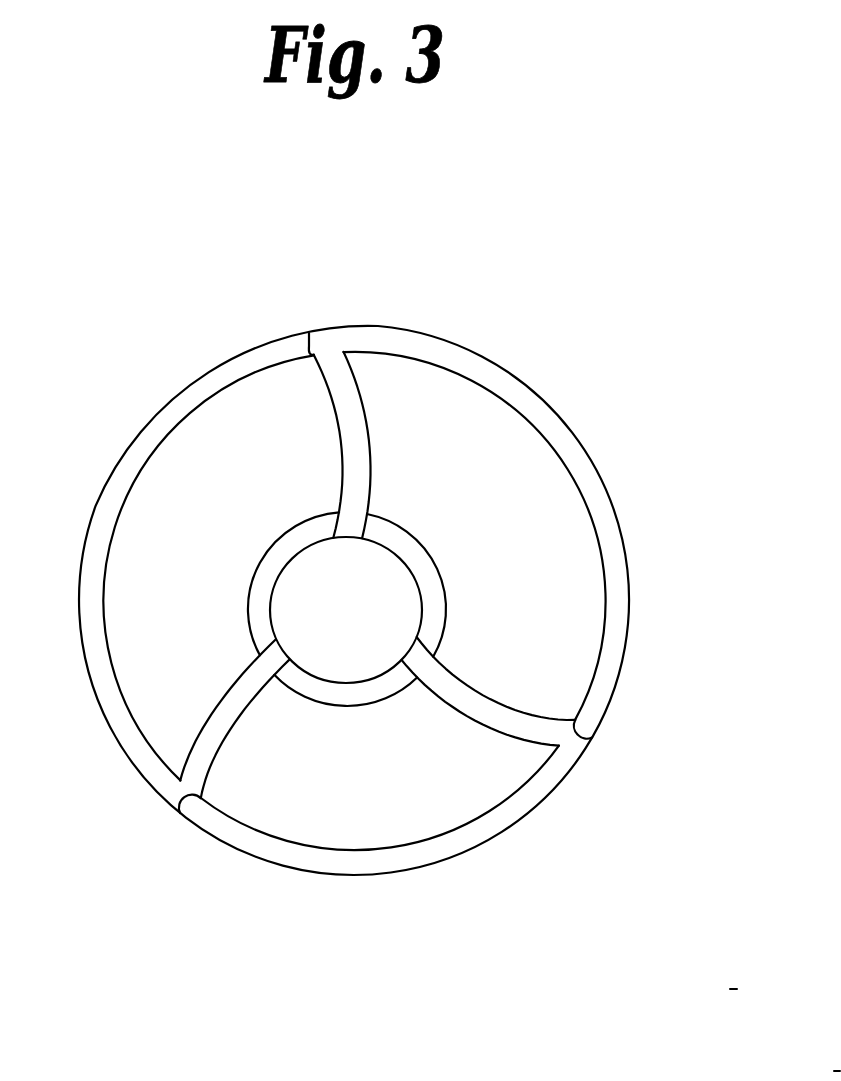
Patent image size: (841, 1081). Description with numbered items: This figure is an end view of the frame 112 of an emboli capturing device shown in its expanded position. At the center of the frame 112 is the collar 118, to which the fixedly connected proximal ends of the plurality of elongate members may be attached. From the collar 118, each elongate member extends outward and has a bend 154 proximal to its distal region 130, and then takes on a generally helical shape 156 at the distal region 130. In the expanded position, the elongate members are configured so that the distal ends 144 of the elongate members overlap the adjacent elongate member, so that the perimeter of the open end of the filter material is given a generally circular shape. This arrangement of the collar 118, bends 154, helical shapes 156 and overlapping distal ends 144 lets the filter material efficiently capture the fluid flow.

The frame 112 is at (406, 307).
The collar 118 is at (278, 538).
The distal region 130 is at (124, 455).
The distal ends 144 is at (322, 335).
The bend 154 is at (442, 662).
The generally helical shape 156 is at (554, 417).